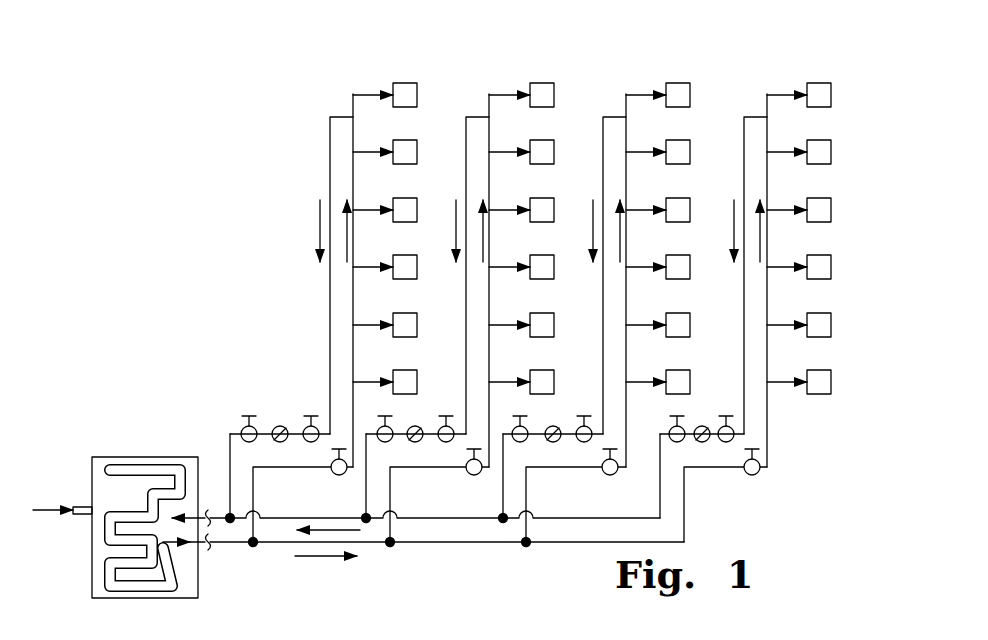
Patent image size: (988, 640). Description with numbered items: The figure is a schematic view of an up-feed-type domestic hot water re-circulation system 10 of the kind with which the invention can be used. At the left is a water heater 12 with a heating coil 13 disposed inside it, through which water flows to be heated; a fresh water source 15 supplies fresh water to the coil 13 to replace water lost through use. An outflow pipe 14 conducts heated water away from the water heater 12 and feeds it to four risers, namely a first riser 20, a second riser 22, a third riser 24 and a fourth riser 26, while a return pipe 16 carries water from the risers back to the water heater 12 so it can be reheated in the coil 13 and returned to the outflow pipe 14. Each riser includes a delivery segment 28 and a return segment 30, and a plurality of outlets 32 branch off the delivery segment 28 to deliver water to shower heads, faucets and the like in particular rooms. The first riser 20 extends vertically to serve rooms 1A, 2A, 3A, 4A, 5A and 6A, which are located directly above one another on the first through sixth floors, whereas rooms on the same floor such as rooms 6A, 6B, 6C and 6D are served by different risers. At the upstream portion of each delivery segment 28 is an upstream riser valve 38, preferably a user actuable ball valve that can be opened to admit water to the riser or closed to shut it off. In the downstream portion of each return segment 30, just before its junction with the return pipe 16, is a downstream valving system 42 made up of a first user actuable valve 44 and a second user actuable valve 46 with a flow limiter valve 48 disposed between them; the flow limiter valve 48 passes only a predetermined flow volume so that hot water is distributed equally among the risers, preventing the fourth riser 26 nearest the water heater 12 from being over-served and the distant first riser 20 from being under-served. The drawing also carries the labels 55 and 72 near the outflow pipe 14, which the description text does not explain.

The domestic hot water system 10 is at (811, 62).
The water heater 12 is at (156, 511).
The heating coil 13 is at (152, 598).
The outflow pipe 14 is at (452, 544).
The fresh water source 15 is at (40, 511).
The return pipe 16 is at (216, 512).
The first riser 20 is at (745, 99).
The second riser 22 is at (603, 81).
The third riser 24 is at (469, 80).
The fourth riser 26 is at (380, 74).
The delivery segment 28 is at (356, 188).
The return segment 30 is at (329, 183).
The outlets 32 is at (365, 152).
The upstream riser valve 38 is at (340, 476).
The downstream valving system 42 is at (309, 362).
The first user actuable valve 44 is at (308, 426).
The second user actuable valve 46 is at (242, 426).
The flow limiter valve 48 is at (278, 426).
The controller 55 is at (343, 639).
The sensor 72 is at (406, 629).
The room 1A is at (831, 382).
The room 2A is at (831, 325).
The room 3A is at (831, 267).
The room 4A is at (831, 210).
The room 5A is at (831, 152).
The room 6A is at (831, 95).
The room 6B is at (691, 95).
The room 6C is at (540, 83).
The room 6D is at (406, 83).